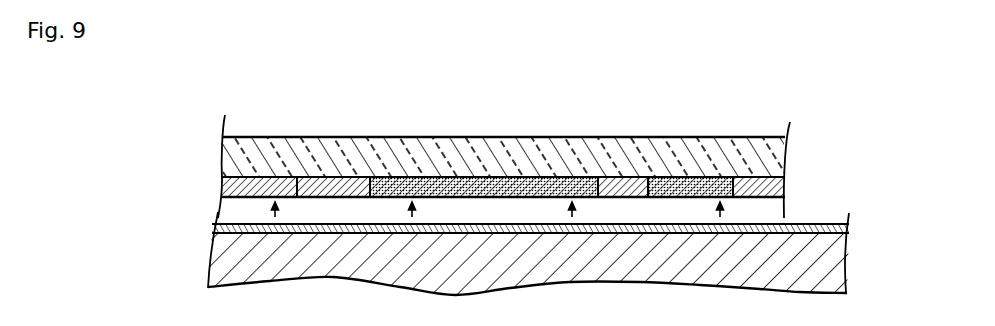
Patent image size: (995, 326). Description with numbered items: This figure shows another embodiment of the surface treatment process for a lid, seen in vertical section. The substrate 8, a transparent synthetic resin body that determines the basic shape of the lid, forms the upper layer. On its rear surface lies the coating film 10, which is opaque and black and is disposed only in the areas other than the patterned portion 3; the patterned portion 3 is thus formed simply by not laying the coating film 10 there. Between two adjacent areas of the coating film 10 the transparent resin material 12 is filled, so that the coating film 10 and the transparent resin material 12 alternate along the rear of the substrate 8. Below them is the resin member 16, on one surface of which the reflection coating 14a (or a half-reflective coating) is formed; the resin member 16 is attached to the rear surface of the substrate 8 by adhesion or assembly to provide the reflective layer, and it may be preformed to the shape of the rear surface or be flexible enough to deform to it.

The patterned portion 3 is at (556, 177).
The substrate 8 is at (353, 148).
The coating film 10 is at (297, 177).
The transparent resin material 12 is at (420, 177).
The reflection coating 14a is at (215, 225).
The resin member 16 is at (219, 261).